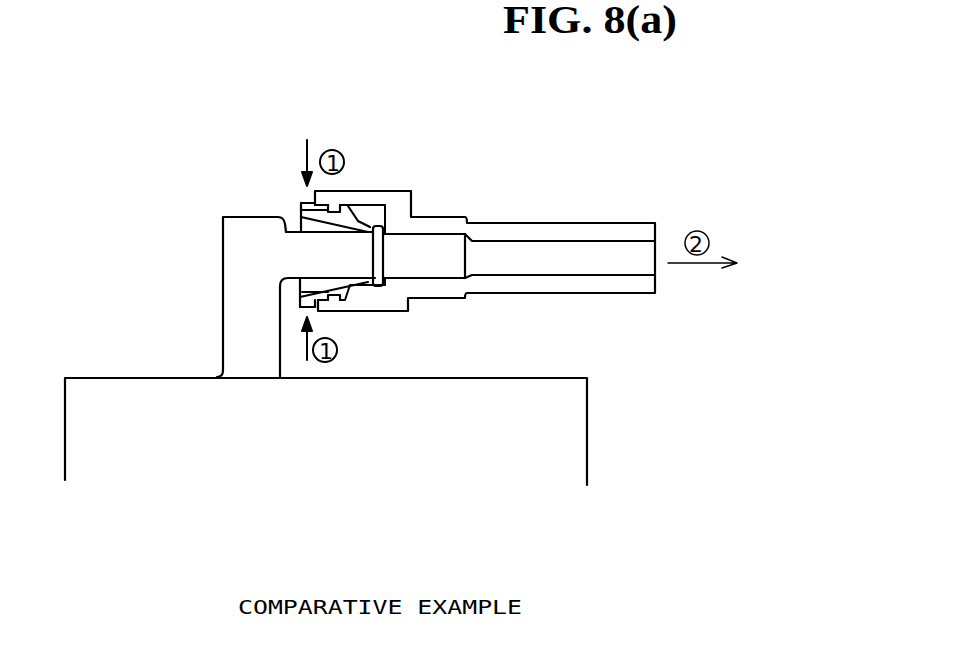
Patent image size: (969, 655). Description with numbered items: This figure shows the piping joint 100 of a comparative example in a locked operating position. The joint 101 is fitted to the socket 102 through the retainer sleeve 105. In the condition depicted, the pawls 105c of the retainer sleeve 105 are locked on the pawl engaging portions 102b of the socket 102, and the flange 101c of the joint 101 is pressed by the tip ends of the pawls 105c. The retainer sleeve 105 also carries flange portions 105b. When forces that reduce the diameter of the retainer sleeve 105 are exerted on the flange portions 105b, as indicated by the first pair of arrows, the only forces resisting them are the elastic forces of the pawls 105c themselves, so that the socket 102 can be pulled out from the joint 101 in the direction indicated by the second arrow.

The piping joint 100 is at (188, 100).
The joint 101 is at (216, 277).
The flange 101c is at (377, 216).
The socket 102 is at (456, 204).
The pawl engaging portion 102b is at (304, 203).
The retainer sleeve 105 is at (363, 213).
The flange portion 105b is at (300, 211).
The pawl 105c is at (350, 216).